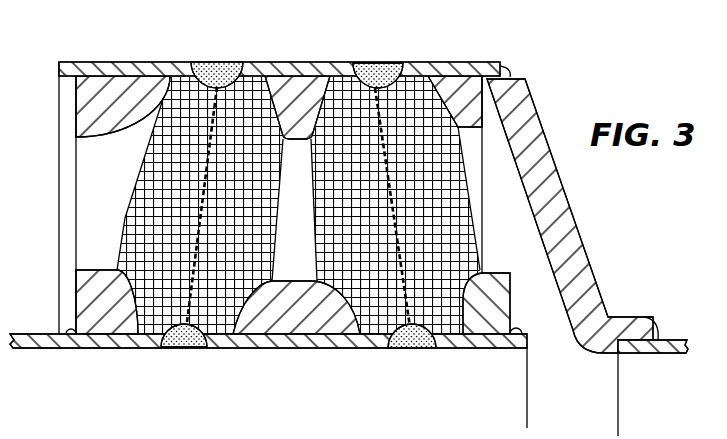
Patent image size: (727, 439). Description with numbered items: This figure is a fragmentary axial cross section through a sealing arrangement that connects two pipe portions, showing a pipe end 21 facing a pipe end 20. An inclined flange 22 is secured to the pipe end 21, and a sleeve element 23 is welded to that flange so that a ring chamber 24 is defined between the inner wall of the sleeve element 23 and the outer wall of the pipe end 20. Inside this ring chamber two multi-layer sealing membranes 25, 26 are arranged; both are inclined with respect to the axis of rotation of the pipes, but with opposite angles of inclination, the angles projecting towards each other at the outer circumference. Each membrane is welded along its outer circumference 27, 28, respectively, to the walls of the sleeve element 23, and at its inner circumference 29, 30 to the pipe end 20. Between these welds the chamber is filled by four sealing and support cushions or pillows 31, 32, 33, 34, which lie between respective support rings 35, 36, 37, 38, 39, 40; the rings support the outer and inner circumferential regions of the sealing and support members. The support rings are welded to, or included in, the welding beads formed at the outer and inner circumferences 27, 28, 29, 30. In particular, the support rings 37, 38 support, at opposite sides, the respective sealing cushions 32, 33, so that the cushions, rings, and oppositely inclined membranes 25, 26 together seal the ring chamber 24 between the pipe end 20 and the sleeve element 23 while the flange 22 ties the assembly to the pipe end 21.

The pipe end 20 is at (88, 343).
The pipe end 21 is at (673, 338).
The inclined flange 22 is at (543, 128).
The sleeve element 23 is at (132, 68).
The ring chamber 24 is at (87, 190).
The sealing membrane 25 is at (203, 145).
The sealing membrane 26 is at (399, 140).
The outer circumference 27 is at (217, 66).
The outer circumference 28 is at (380, 68).
The inner circumference 29 is at (183, 348).
The inner circumference 30 is at (417, 349).
The sealing and support cushion 31 is at (153, 316).
The sealing and support cushion 32 is at (220, 330).
The sealing and support cushion 33 is at (378, 310).
The sealing and support cushion 34 is at (442, 310).
The support ring 35 is at (87, 92).
The support ring 36 is at (83, 295).
The support ring 37 is at (291, 84).
The support ring 38 is at (303, 317).
The support ring 39 is at (467, 88).
The support ring 40 is at (498, 307).